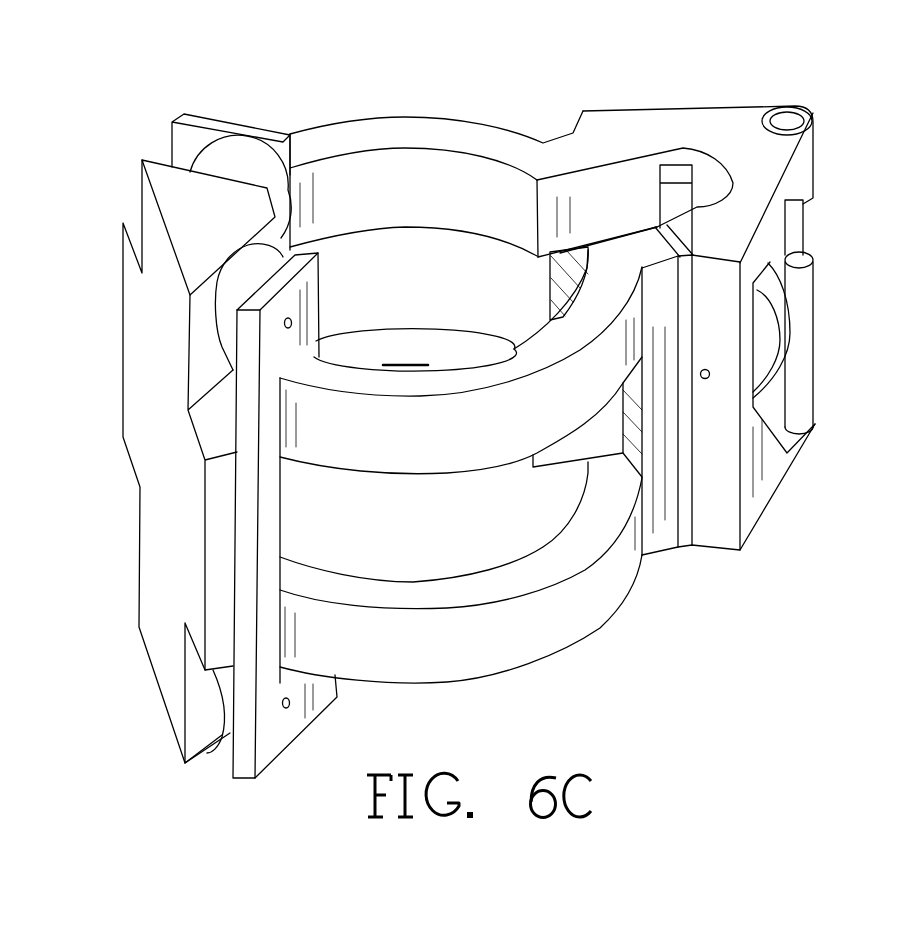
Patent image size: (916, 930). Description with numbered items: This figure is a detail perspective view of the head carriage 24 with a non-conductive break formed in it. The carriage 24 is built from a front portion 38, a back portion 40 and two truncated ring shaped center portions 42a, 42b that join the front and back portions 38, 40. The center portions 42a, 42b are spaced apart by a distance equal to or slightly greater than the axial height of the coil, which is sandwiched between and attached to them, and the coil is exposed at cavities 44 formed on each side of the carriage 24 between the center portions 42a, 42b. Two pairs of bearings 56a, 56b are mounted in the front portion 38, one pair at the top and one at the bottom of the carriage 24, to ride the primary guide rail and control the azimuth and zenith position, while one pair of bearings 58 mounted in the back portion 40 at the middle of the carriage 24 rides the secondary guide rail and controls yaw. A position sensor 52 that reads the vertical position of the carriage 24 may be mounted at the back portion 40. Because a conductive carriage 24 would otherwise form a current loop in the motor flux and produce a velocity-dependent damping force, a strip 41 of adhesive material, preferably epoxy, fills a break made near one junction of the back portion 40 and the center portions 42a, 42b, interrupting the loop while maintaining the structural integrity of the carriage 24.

The carriage 24 is at (492, 98).
The front portion 38 is at (155, 170).
The back portion 40 is at (734, 115).
The strip of adhesive material 41 is at (683, 533).
The center portion 42a is at (416, 125).
The center portion 42b is at (594, 611).
The cavities 44 is at (428, 242).
The position sensor 52 is at (818, 230).
The bearings 56a is at (237, 273).
The bearings 56b is at (217, 700).
The bearings 58 is at (688, 193).